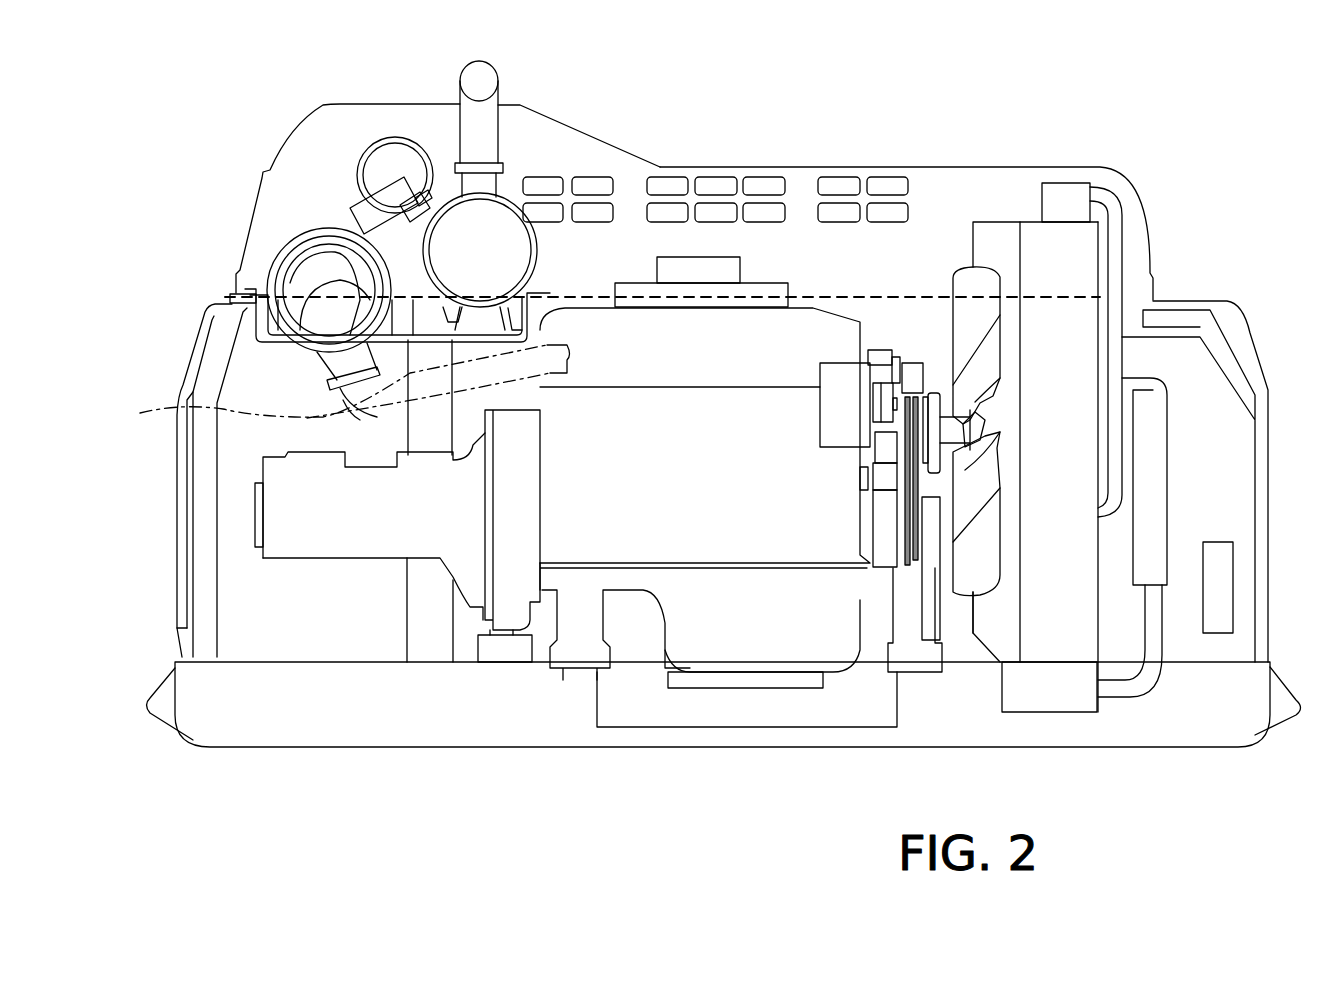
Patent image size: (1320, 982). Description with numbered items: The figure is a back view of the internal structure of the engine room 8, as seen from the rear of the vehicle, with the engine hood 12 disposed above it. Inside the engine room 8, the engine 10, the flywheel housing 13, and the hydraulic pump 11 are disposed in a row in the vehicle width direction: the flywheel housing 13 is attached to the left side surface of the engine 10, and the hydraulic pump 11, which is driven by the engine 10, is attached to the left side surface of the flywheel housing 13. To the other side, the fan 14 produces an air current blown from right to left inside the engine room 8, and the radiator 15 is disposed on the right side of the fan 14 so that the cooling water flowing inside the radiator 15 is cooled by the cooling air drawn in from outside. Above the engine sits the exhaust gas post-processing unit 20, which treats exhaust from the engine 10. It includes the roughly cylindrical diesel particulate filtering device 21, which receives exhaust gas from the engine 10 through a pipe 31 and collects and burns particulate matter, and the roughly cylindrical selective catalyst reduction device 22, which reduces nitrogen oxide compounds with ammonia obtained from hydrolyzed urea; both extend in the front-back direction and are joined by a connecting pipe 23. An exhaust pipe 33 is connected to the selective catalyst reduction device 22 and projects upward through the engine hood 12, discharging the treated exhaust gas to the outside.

The engine room 8 is at (800, 195).
The engine 10 is at (743, 557).
The hydraulic pump 11 is at (335, 537).
The engine hood 12 is at (880, 167).
The flywheel housing 13 is at (510, 600).
The fan 14 is at (968, 285).
The radiator 15 is at (1020, 210).
The exhaust gas post-processing unit 20 is at (313, 183).
The diesel particulate filtering device 21 is at (290, 255).
The selective catalyst reduction device 22 is at (488, 228).
The connecting pipe 23 is at (397, 157).
The pipe 31 is at (152, 414).
The exhaust pipe 33 is at (485, 135).